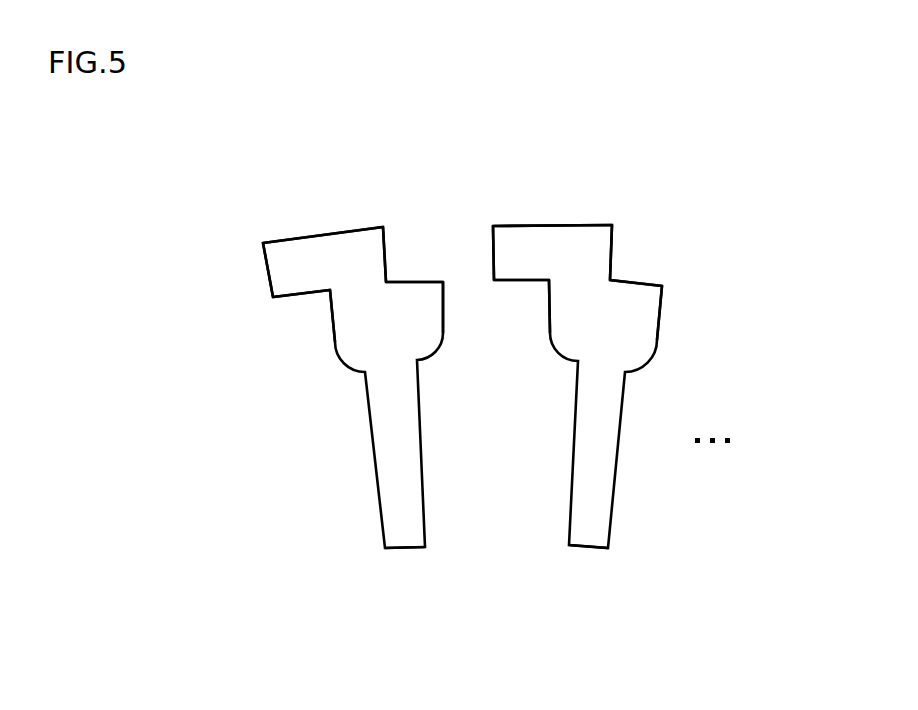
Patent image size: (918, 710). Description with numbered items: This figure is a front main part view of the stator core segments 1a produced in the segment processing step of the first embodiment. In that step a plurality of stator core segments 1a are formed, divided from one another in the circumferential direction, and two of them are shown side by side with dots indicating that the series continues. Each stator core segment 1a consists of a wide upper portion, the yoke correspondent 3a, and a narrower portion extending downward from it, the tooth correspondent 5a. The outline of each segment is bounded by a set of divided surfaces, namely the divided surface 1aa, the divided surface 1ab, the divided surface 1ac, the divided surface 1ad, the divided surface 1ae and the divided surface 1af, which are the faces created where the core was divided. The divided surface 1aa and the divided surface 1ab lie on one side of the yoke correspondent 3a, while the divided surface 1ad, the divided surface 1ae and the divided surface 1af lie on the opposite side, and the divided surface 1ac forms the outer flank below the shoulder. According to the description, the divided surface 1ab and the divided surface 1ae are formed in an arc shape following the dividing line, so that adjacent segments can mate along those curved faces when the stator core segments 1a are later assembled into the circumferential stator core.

The stator core segment 1a is at (333, 228).
The divided surface 1aa is at (387, 245).
The divided surface 1ab is at (417, 277).
The divided surface 1ac is at (450, 310).
The divided surface 1ad is at (265, 273).
The divided surface 1ae is at (297, 298).
The divided surface 1af is at (330, 328).
The yoke correspondent 3a is at (295, 248).
The tooth correspondent 5a is at (407, 537).